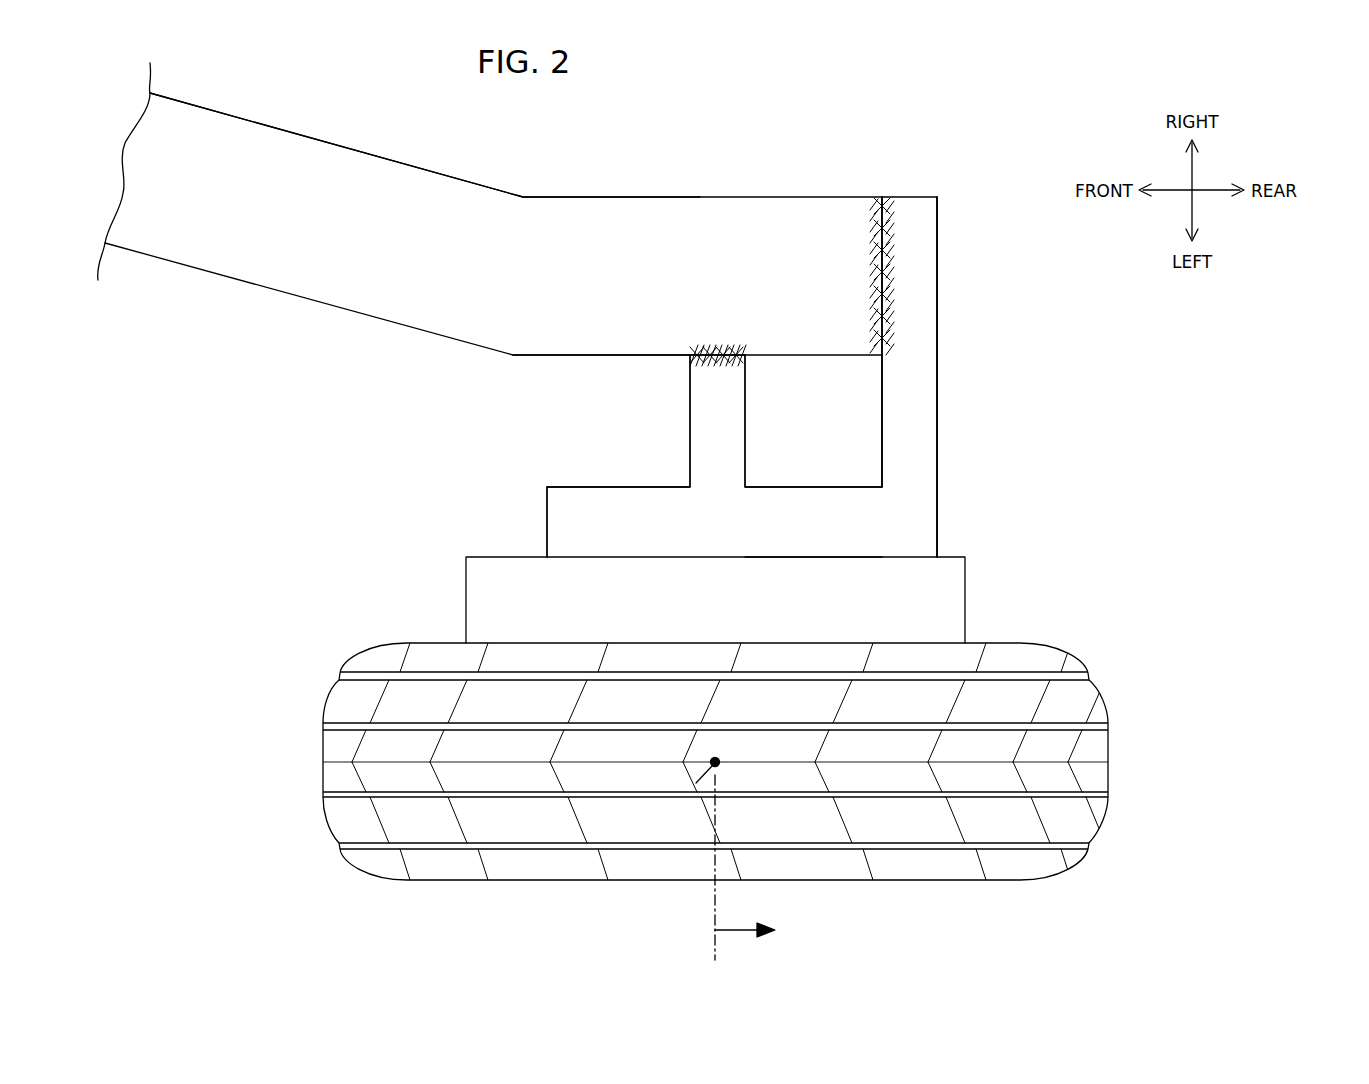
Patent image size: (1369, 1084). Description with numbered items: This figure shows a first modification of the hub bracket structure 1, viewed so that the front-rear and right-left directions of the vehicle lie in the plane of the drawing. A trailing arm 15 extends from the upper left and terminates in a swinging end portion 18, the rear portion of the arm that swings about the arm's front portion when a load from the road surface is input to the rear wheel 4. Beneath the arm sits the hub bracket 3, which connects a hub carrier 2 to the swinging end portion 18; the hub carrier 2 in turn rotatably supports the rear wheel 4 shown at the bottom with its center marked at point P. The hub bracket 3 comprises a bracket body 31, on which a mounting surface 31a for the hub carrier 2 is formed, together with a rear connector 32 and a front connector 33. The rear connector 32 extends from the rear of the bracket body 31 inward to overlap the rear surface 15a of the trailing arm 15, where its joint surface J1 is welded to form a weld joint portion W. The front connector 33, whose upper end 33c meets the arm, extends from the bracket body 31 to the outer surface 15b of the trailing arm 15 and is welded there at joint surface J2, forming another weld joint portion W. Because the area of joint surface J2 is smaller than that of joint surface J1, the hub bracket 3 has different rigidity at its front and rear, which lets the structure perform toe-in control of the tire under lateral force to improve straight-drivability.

The hub bracket structure 1 is at (1040, 398).
The hub carrier 2 is at (965, 594).
The hub bracket 3 is at (609, 369).
The rear wheel 4 is at (1100, 684).
The trailing arm 15 is at (807, 197).
The rear surface of trailing arm 15a is at (884, 262).
The outer surface of trailing arm 15b is at (587, 356).
The swinging end portion 18 is at (729, 170).
The bracket body 31 is at (645, 520).
The mounting surface 31a is at (822, 557).
The rear connector 32 is at (905, 423).
The front connector 33 is at (714, 437).
The upper end of upper bracket portion 33c is at (740, 352).
The joint surface of rear connector J1 is at (888, 326).
The joint surface of front connector J2 is at (718, 343).
The weld joint portion W is at (742, 343).
The wheel center point P is at (685, 800).